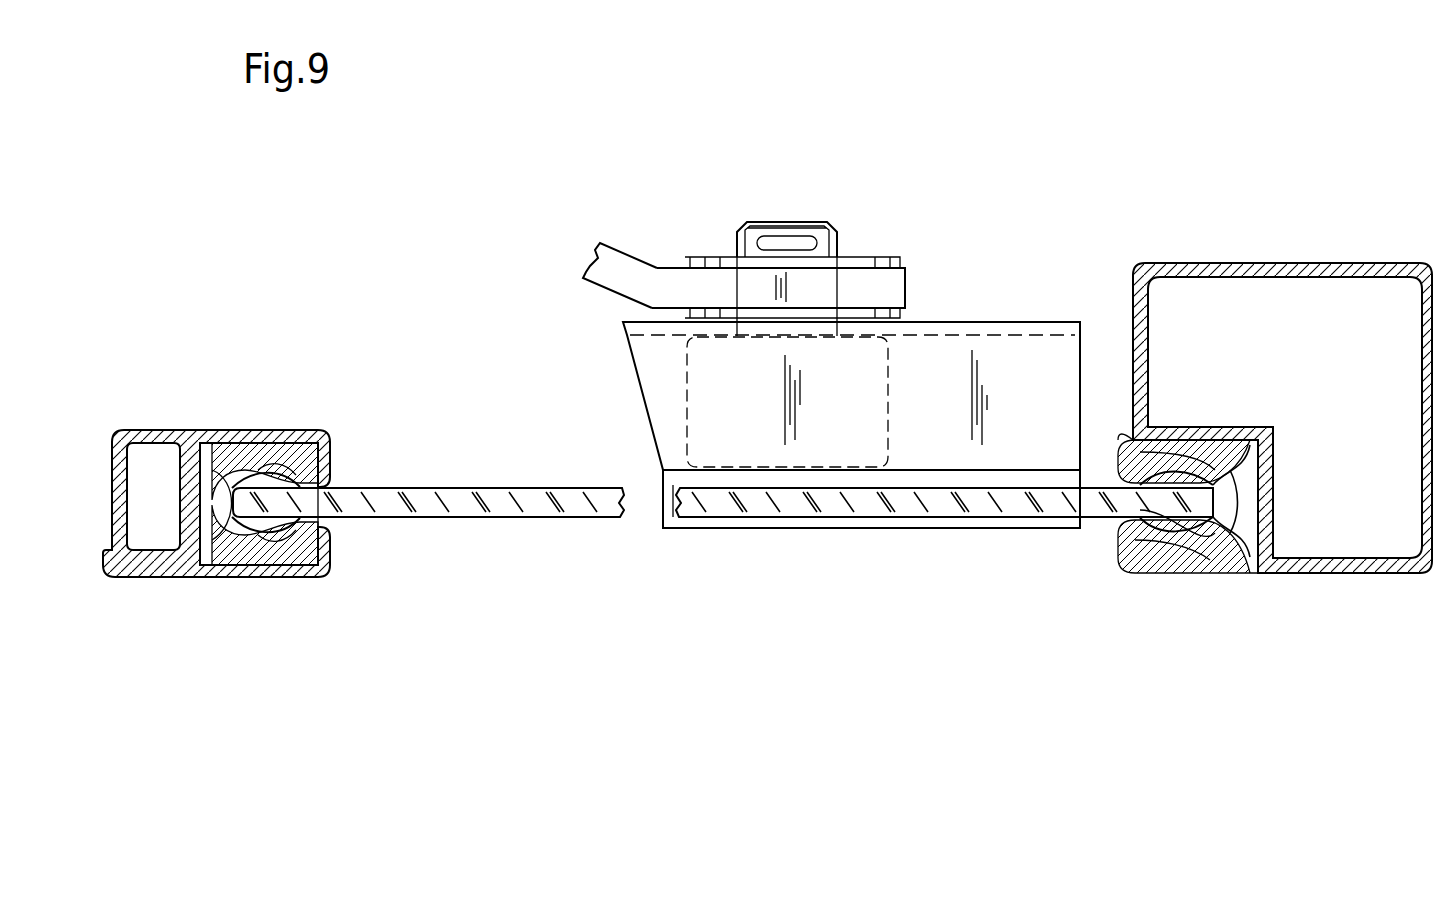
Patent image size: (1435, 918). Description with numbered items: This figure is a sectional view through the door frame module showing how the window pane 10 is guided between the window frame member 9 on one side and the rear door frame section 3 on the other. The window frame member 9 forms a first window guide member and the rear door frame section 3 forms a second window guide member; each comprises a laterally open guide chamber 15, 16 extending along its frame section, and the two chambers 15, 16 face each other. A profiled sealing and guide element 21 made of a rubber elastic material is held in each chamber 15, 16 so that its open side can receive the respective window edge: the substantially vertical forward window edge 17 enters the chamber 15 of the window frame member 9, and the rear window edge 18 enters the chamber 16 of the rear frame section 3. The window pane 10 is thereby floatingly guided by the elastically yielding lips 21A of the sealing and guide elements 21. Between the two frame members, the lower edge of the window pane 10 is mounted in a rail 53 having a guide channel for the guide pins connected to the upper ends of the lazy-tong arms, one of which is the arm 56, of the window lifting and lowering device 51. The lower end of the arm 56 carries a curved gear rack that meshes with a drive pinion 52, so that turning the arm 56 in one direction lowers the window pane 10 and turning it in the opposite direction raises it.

The rear door frame section 3 is at (1255, 261).
The window frame member 9 is at (146, 428).
The window pane 10 is at (443, 486).
The guide chamber 15 is at (262, 466).
The guide chamber 16 is at (1175, 545).
The forward window edge 17 is at (283, 500).
The rear window edge 18 is at (1210, 500).
The sealing and guide element 21 is at (301, 450).
The elastically yielding lips 21A is at (276, 486).
The window lifting and lowering device 51 is at (620, 242).
The drive pinion 52 is at (868, 435).
The rail 53 is at (928, 367).
The lazy-tong arm 56 is at (600, 243).